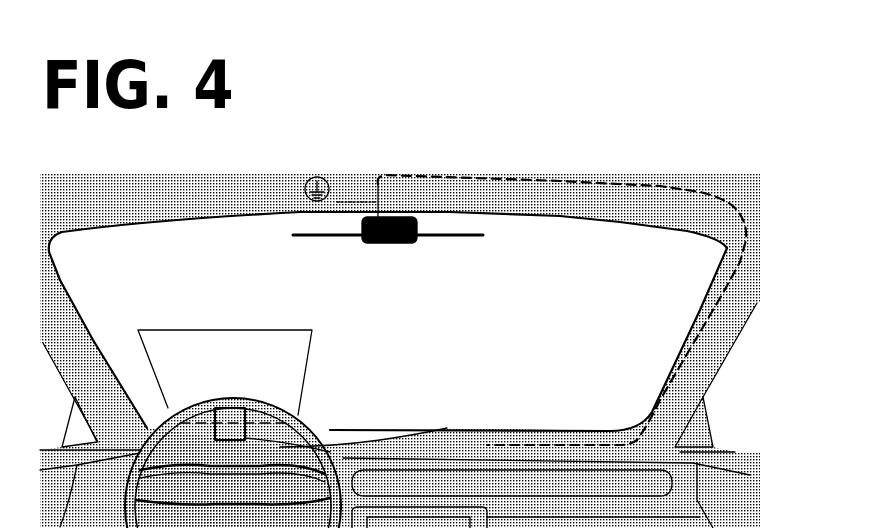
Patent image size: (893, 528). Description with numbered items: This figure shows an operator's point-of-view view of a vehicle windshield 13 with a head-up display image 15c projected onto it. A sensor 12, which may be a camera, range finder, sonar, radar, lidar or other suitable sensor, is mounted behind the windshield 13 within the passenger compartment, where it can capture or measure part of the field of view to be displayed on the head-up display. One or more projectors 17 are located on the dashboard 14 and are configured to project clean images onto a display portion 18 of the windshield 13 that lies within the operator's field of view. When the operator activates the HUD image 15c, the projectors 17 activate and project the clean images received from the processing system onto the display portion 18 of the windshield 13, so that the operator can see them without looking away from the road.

The windshield 13 is at (563, 277).
The sensor 12 is at (410, 245).
The display portion of the windshield 18 is at (180, 337).
The HUD image 15c is at (266, 355).
The dashboard 14 is at (333, 427).
The projector 17 is at (444, 490).